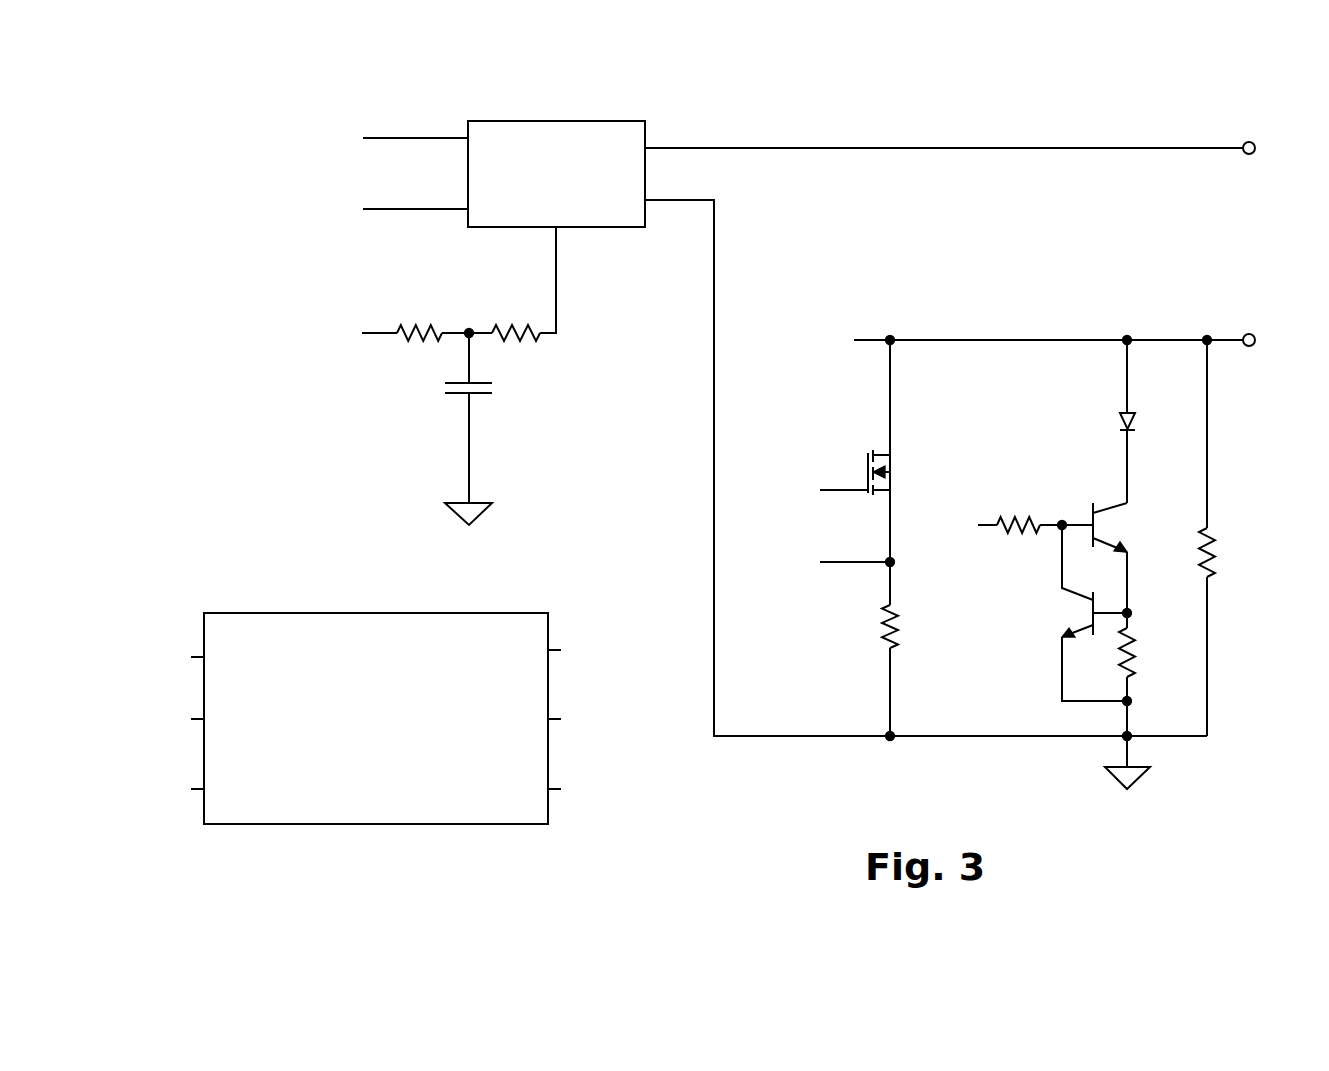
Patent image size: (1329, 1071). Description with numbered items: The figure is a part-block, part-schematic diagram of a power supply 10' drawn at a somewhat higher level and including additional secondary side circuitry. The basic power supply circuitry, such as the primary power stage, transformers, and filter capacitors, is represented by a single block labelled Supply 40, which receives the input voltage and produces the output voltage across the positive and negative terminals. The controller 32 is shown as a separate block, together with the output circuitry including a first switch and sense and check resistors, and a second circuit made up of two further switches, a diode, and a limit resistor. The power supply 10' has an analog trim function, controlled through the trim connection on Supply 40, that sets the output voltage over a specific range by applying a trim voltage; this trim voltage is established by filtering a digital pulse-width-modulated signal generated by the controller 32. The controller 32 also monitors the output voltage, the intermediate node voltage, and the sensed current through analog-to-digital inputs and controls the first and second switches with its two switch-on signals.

The power supply 10' is at (720, 441).
The Supply 40 is at (535, 118).
The controller 32 is at (391, 718).